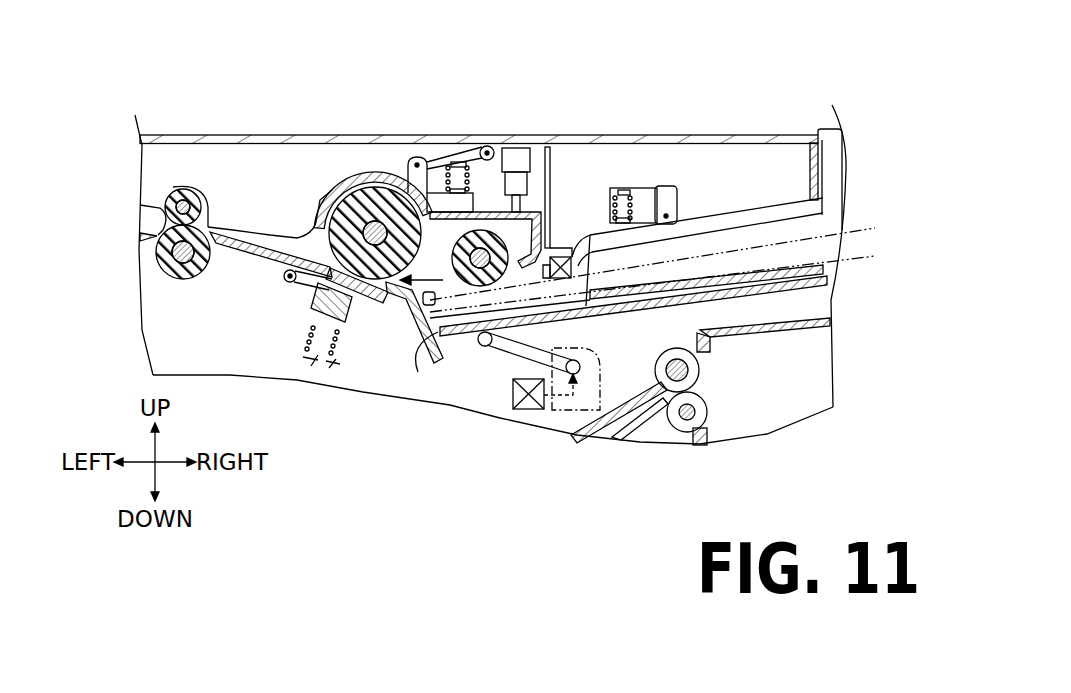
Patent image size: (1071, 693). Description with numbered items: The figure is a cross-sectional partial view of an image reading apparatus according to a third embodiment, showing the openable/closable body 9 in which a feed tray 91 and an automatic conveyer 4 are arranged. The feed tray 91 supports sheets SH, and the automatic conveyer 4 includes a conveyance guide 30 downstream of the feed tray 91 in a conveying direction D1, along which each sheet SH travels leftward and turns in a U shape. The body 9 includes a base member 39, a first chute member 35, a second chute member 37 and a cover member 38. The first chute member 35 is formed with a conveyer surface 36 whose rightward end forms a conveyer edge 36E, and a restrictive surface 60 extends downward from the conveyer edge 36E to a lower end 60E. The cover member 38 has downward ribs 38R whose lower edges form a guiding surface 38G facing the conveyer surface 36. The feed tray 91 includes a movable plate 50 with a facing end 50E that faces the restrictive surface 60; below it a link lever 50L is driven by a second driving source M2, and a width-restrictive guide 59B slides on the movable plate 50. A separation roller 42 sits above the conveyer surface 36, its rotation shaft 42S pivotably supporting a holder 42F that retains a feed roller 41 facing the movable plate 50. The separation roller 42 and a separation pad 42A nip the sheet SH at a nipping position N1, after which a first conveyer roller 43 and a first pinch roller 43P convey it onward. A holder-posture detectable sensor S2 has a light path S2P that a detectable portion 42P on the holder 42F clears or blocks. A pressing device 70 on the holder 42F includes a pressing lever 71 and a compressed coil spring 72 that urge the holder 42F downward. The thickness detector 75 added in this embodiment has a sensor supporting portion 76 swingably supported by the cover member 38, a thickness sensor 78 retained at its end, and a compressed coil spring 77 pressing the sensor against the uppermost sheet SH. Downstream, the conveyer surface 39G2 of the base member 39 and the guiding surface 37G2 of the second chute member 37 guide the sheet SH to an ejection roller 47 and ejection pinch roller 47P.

The openable/closable body 9 is at (146, 98).
The cover member 38 is at (136, 138).
The ribs 38R is at (163, 174).
The guiding surface 38G is at (208, 226).
The first pinch roller 43P is at (165, 208).
The first conveyer roller 43 is at (182, 280).
The first chute member 35 is at (240, 262).
The conveyer surface 36 is at (252, 230).
The conveyance guide 30 is at (237, 222).
The holder 42F is at (327, 182).
The rotation shaft 42S is at (394, 178).
The separation roller 42 is at (374, 186).
The conveying direction D1 is at (432, 274).
The detectable portion 42P is at (552, 245).
The pressing device 70 is at (478, 106).
The compressed coil spring 72 is at (441, 187).
The pressing lever 71 is at (487, 146).
The holder-posture detectable sensor S2 is at (518, 164).
The light path S2P is at (500, 247).
The feed roller 41 is at (578, 238).
The thickness detector 75 is at (676, 112).
The thickness sensor 78 is at (612, 194).
The compressed coil spring 77 is at (640, 208).
The sensor supporting portion 76 is at (690, 205).
The width-restrictive guide 59B is at (836, 150).
The sheet SH is at (863, 218).
The feed tray 91 is at (840, 271).
The movable plate 50 is at (778, 294).
The separation pad 42A is at (317, 297).
The conveyer edge 36E is at (390, 308).
The nipping position N1 is at (332, 276).
The automatic conveyer 4 is at (263, 354).
The facing end 50E is at (437, 342).
The lower end 60E is at (440, 365).
The restrictive surface 60 is at (472, 335).
The link lever 50L is at (486, 347).
The second driving source M2 is at (528, 411).
The conveyer surface 39G2 is at (613, 408).
The guiding surface 37G2 is at (612, 432).
The second chute member 37 is at (574, 442).
The ejection roller 47 is at (698, 368).
The ejection pinch roller 47P is at (700, 407).
The base member 39 is at (700, 454).